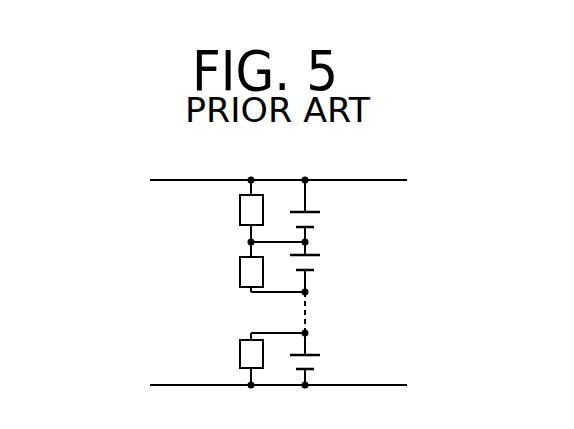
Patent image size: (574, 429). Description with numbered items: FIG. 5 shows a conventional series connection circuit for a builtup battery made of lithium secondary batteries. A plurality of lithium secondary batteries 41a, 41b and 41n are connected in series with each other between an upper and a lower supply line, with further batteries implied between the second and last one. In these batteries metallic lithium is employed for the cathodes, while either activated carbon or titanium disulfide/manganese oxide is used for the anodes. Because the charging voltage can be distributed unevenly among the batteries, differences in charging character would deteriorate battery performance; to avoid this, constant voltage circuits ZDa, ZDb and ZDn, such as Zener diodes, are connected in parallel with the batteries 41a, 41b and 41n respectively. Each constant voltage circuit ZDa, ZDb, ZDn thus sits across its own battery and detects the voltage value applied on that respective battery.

The constant voltage circuit ZDa is at (240, 213).
The constant voltage circuit ZDb is at (240, 273).
The constant voltage circuit ZDn is at (240, 352).
The lithium secondary battery 41a is at (328, 221).
The lithium secondary battery 41b is at (328, 263).
The lithium secondary battery 41n is at (328, 360).